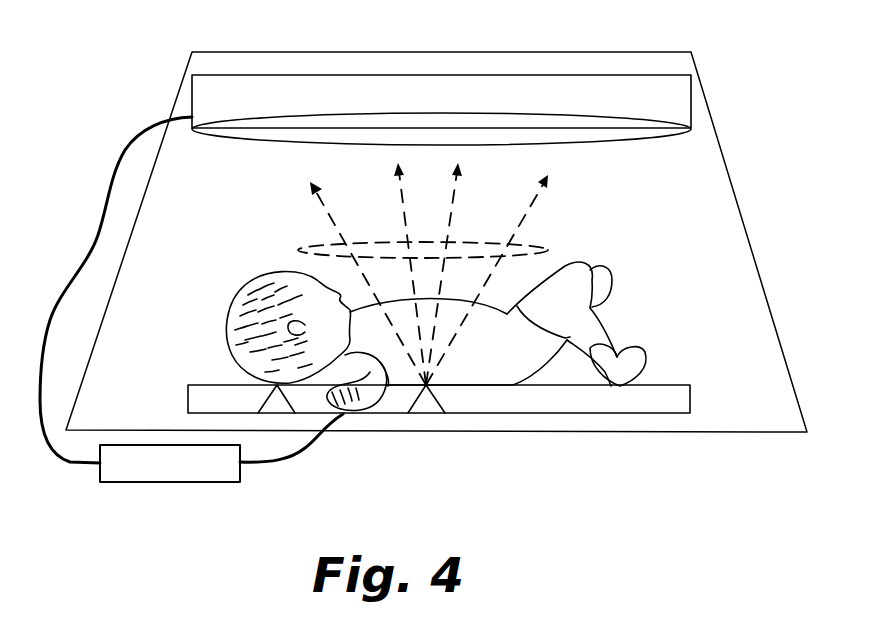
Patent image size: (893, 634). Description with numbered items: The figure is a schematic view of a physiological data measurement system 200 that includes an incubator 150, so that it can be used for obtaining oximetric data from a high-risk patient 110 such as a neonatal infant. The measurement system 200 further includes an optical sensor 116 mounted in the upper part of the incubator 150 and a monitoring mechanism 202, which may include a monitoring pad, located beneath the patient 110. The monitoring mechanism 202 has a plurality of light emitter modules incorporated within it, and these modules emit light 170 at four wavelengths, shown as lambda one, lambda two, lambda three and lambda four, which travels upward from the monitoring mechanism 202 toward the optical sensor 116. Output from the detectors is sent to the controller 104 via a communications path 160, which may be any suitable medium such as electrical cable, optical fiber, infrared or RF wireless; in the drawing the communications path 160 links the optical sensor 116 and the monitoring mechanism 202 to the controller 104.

The physiological data measurement system 200 is at (118, 101).
The incubator 150 is at (528, 52).
The optical sensor 116 is at (683, 118).
The communications path 160 is at (99, 233).
The light 170 is at (297, 250).
The high-risk patient 110 is at (645, 350).
The monitoring mechanism 202 is at (188, 393).
The controller 104 is at (115, 484).